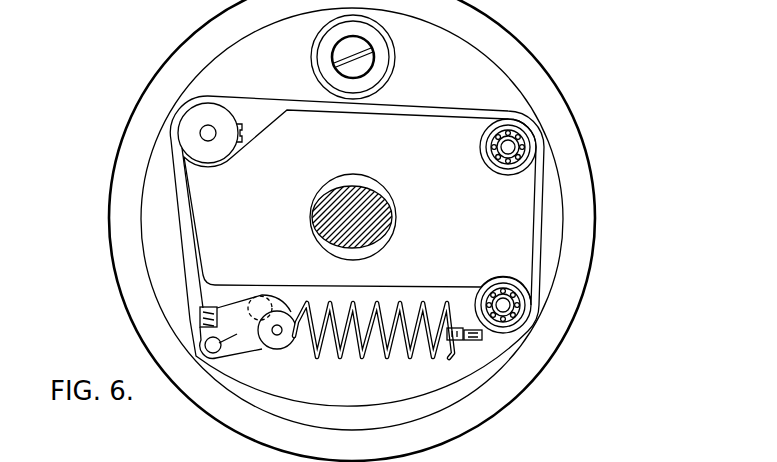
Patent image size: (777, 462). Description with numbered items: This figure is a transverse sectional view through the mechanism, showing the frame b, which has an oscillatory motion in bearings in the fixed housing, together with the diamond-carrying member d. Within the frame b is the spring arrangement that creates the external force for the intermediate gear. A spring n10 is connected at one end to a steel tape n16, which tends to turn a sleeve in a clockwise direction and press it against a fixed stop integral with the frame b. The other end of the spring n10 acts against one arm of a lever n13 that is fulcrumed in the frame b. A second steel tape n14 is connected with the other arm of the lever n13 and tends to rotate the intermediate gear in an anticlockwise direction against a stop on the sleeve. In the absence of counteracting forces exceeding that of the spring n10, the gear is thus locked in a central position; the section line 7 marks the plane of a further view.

The steel tape n16 is at (392, 107).
The second steel tape n14 is at (192, 238).
The lever n13 is at (205, 345).
The spring n10 is at (318, 359).
The diamond-carrying member d is at (323, 212).
The section line 7 is at (120, 127).
The frame b is at (558, 237).